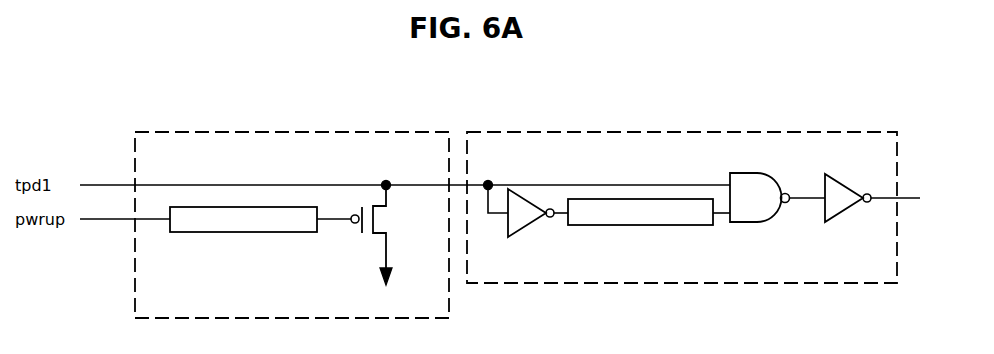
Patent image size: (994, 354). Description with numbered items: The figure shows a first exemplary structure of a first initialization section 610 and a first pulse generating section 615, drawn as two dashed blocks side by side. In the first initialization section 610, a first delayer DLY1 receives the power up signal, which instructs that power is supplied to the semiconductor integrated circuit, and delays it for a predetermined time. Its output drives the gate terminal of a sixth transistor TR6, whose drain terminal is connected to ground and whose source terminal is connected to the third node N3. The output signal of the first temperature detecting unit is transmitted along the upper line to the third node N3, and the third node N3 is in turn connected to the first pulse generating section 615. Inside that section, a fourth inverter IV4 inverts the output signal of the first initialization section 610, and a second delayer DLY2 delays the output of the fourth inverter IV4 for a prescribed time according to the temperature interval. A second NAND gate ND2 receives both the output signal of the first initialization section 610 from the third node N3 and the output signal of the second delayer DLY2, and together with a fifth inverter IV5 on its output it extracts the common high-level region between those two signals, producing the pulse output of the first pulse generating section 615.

The first initialization section 610 is at (402, 131).
The first pulse generating section 615 is at (840, 131).
The sixth transistor TR6 is at (388, 205).
The third node N3 is at (379, 171).
The fourth inverter IV4 is at (525, 227).
The fifth inverter IV5 is at (840, 213).
The second NAND gate ND2 is at (770, 175).
The first delayer DLY1 is at (243, 219).
The second delayer DLY2 is at (640, 212).